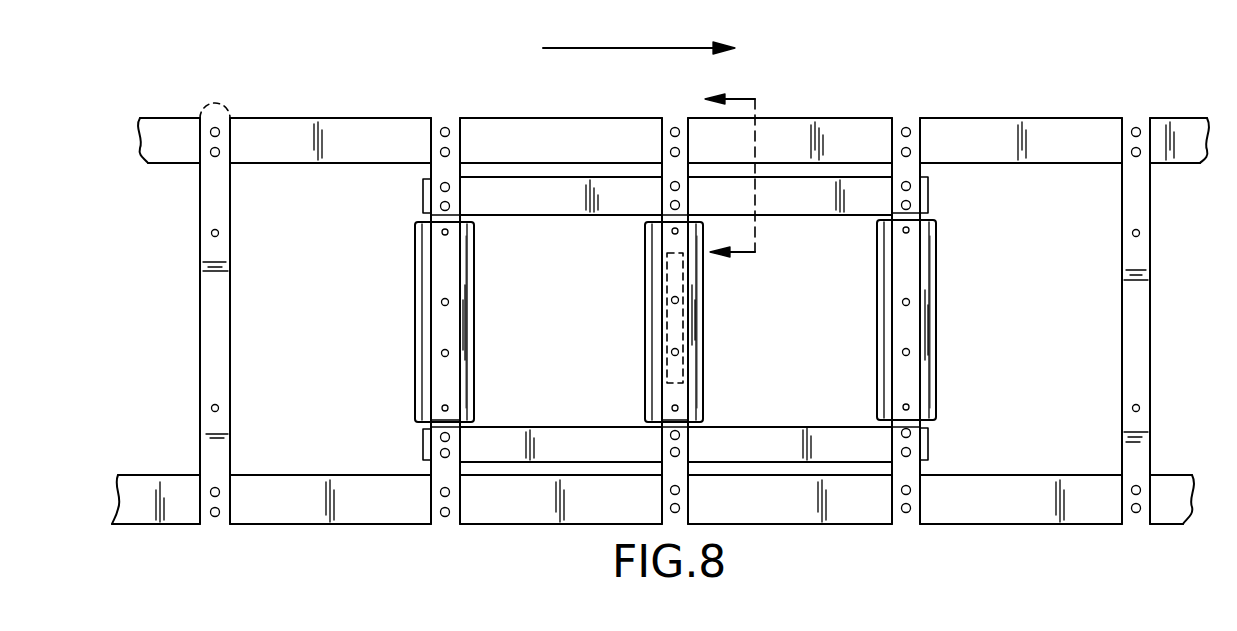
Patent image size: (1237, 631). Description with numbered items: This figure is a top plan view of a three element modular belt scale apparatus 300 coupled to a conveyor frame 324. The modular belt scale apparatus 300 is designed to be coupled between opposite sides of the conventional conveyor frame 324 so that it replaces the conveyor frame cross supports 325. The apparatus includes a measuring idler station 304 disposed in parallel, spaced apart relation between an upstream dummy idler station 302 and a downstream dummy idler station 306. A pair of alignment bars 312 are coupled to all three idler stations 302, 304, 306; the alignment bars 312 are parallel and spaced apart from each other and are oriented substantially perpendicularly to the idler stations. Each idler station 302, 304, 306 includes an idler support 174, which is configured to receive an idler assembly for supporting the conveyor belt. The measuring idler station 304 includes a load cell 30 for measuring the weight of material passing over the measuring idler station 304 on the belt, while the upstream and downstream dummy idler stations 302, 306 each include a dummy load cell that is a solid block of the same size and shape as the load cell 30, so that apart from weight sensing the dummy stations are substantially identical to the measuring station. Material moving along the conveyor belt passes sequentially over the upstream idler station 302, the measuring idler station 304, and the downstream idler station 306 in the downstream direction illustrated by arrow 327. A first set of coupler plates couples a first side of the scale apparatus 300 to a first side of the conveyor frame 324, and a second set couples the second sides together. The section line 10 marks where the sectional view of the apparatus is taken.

The section line 10- 10 is at (752, 178).
The load cell 30 is at (668, 318).
The idler support 174 is at (925, 230).
The modular belt scale apparatus 300 is at (985, 273).
The upstream dummy idler station 302 is at (480, 350).
The measuring idler station 304 is at (708, 321).
The downstream dummy idler station 306 is at (947, 378).
The alignment bar 312 is at (562, 190).
The conveyor frame 324 is at (999, 121).
The conveyor frame cross support 325 is at (225, 295).
The arrow 327 is at (633, 48).